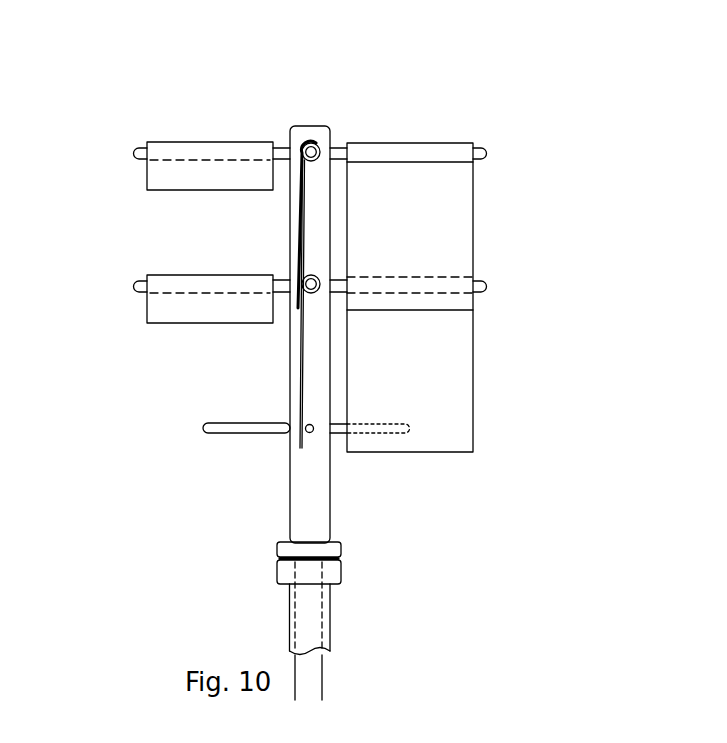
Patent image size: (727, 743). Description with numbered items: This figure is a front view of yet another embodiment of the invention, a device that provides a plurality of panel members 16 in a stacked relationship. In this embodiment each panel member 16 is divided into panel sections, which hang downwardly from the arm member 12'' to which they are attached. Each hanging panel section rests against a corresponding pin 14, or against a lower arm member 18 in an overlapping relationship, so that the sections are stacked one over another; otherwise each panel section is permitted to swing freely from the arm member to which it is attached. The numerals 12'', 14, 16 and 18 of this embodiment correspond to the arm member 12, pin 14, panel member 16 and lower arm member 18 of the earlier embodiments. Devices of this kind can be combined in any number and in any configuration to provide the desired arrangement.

The arm member 12 is at (329, 354).
The arm member 12'' is at (254, 294).
The pin 14 is at (133, 155).
The panel member 16 is at (460, 430).
The lower arm member 18 is at (222, 428).